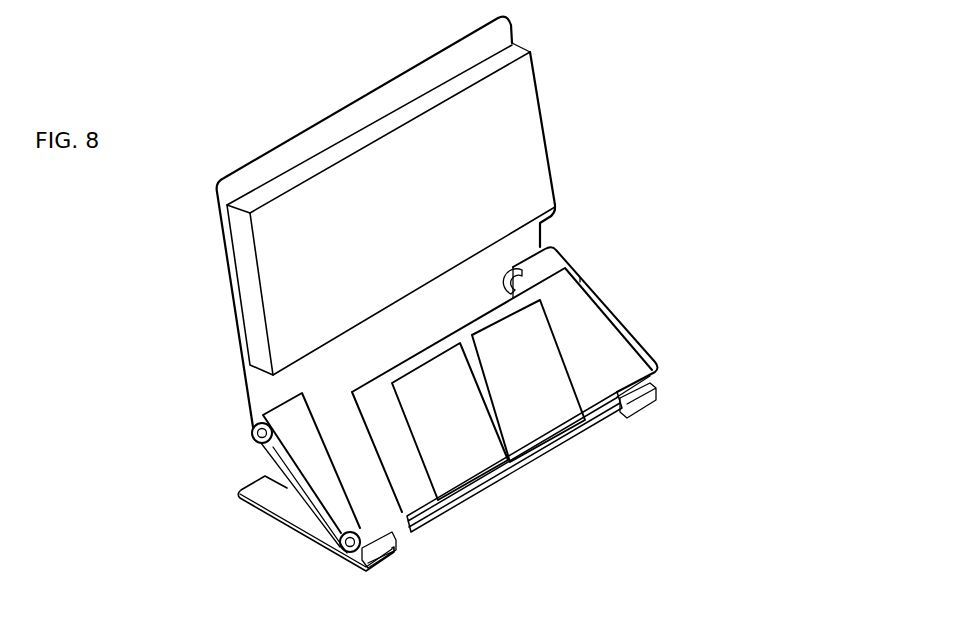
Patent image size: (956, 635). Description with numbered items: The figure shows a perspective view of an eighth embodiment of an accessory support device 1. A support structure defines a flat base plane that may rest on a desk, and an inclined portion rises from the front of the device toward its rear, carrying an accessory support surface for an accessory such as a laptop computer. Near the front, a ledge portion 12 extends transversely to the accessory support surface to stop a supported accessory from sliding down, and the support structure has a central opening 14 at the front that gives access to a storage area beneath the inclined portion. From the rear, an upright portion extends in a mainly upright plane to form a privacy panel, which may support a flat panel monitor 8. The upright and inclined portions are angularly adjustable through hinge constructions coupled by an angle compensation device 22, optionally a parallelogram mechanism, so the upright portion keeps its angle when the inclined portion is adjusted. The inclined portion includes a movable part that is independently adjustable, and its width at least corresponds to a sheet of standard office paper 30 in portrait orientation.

The accessory support device 1 is at (111, 397).
The flat panel monitor 8 is at (512, 218).
The sheet of standard A4 or Legal sized office paper 30 is at (528, 315).
The ledge portion 12 is at (660, 367).
The central opening 14 is at (460, 513).
The angle compensation device 22 is at (318, 518).